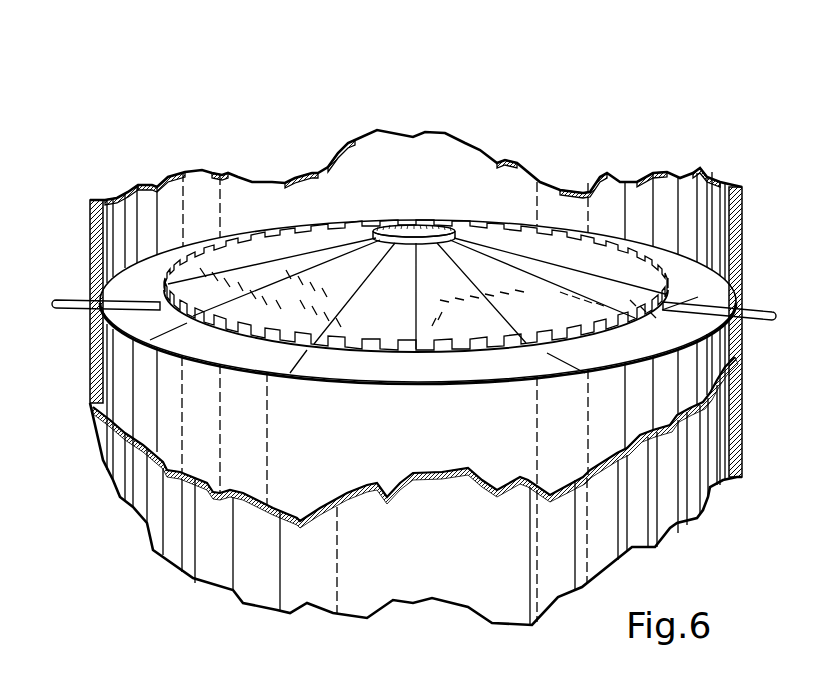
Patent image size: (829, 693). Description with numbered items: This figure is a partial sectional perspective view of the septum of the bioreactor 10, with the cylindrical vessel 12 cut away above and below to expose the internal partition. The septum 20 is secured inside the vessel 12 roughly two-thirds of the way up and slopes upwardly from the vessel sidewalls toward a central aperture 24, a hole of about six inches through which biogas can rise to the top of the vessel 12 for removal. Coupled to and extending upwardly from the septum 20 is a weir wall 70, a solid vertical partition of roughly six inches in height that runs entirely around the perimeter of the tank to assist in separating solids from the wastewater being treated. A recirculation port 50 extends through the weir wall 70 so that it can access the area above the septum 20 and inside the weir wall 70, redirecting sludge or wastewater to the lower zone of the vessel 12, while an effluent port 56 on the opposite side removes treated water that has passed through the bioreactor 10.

The bioreactor 10 is at (428, 84).
The vessel 12 is at (457, 552).
The septum 20 is at (473, 334).
The central aperture 24 is at (414, 224).
The recirculation port 50 is at (750, 318).
The effluent port 56 is at (80, 314).
The weir wall 70 is at (365, 330).